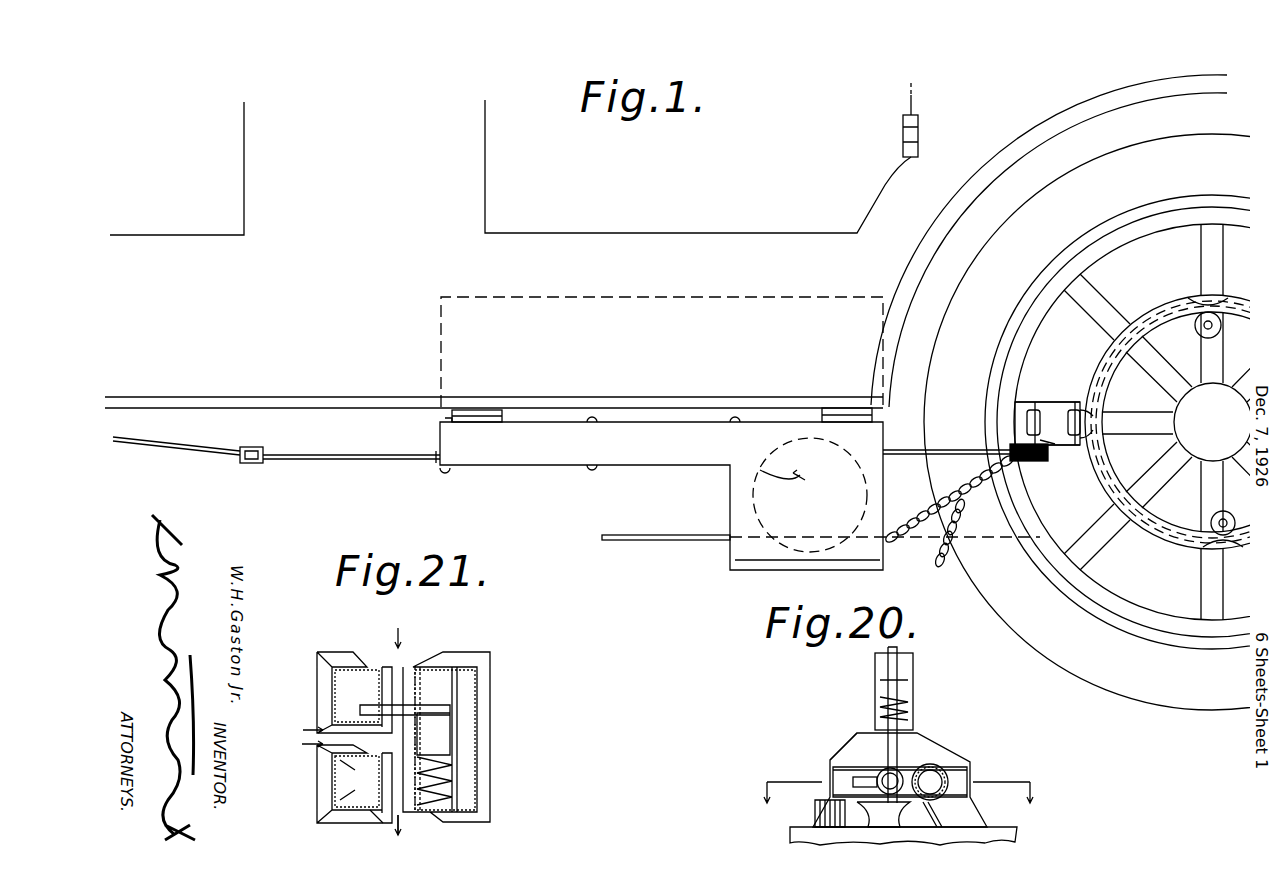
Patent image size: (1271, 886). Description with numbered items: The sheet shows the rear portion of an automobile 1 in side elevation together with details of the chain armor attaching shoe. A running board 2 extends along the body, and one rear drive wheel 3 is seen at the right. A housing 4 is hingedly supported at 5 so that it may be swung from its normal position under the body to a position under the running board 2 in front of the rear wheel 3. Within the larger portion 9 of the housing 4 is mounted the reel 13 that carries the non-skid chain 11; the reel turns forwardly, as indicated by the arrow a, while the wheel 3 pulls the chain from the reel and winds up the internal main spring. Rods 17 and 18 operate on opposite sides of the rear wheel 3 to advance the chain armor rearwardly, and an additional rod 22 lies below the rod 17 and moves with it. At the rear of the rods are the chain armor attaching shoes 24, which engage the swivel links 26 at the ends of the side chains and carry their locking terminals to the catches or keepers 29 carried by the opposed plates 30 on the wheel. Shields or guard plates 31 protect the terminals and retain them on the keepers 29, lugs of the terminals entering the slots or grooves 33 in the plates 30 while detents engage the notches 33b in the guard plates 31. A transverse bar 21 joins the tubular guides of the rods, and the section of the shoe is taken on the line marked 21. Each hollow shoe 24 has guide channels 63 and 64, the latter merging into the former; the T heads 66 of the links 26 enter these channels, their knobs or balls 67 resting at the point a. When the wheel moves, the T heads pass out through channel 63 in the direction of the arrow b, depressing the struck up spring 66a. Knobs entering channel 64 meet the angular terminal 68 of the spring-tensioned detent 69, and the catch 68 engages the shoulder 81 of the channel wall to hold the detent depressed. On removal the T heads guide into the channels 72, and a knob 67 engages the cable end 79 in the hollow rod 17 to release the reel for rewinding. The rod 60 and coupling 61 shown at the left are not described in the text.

In FIG. 1, the automobile 1 is at (398, 135).
In FIG. 1, the running board 2 is at (617, 408).
In FIG. 1, the rear wheel 3 is at (1152, 690).
In FIG. 1, the housing 4 is at (752, 566).
In FIG. 1, the hinge support 5 is at (476, 410).
In FIG. 1, the larger portion of housing 9 is at (752, 498).
In FIG. 1, the non-skid chain 11 is at (908, 540).
In FIG. 1, the reel 13 is at (750, 485).
In FIG. 1, the rod 17 is at (905, 448).
In FIG. 1, the rod 18 is at (920, 460).
In FIG. 1, the additional rod 22 is at (651, 540).
In FIG. 1, the chain armor attaching shoe 24 is at (1040, 462).
In FIG. 21, the chain armor attaching shoe 24 is at (467, 700).
In FIG. 20, the chain armor attaching shoe 24 is at (940, 753).
In FIG. 1, the swivel link 26 is at (1012, 494).
In FIG. 1, the catch or keeper 29 is at (1025, 410).
In FIG. 1, the opposed plate 30 is at (1055, 402).
In FIG. 1, the shield or guard plate 31 is at (1030, 408).
In FIG. 1, the slot or groove 33 is at (1055, 446).
In FIG. 1, the notch 33b is at (1027, 422).
In FIG. 1, the rod 60 is at (410, 460).
In FIG. 1, the coupling 61 is at (247, 463).
In FIG. 1, the point a is at (803, 480).
In FIG. 21, the point a is at (397, 737).
In FIG. 20, the transverse bar 21 is at (896, 804).
In FIG. 21, the guide channel 63 is at (397, 683).
In FIG. 20, the guide channel 63 is at (900, 763).
In FIG. 21, the guide channel 64 is at (337, 773).
In FIG. 20, the guide channel 64 is at (828, 773).
In FIG. 20, the T head 66 is at (840, 810).
In FIG. 21, the struck up spring 66a is at (383, 813).
In FIG. 20, the knob or ball 67 is at (843, 750).
In FIG. 21, the angular terminal or catch of detent 68 is at (337, 700).
In FIG. 21, the detent 69 is at (440, 707).
In FIG. 20, the channel 72 is at (943, 807).
In FIG. 20, the cable end 79 is at (890, 748).
In FIG. 21, the shoulder 81 is at (343, 765).
In FIG. 21, the arrow b is at (414, 830).